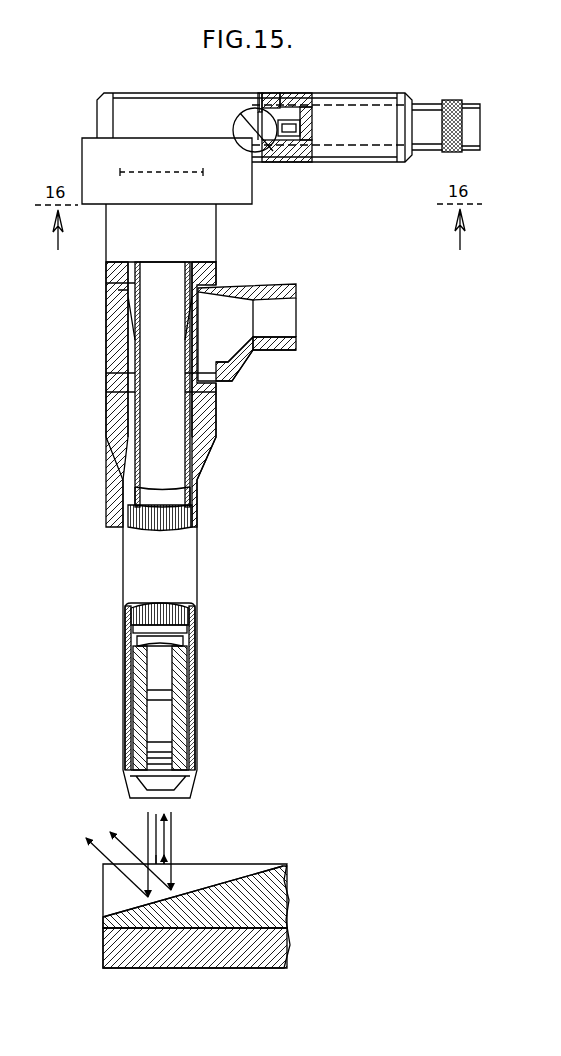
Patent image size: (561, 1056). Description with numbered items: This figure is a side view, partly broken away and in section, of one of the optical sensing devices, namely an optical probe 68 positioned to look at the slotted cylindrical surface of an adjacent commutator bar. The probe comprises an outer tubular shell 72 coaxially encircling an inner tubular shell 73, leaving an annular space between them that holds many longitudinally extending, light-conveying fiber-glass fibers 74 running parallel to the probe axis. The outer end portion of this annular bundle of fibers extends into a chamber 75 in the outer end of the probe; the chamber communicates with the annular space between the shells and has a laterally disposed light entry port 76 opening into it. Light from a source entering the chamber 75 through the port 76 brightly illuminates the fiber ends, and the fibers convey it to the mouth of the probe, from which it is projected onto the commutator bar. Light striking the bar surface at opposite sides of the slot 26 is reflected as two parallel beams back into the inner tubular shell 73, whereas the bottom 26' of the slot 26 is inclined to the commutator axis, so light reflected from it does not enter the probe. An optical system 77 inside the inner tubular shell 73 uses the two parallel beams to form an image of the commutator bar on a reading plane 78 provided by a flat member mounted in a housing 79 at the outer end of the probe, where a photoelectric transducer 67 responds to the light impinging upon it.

The commutator slot 26 is at (196, 900).
The slot bottom 26' is at (241, 856).
The photoelectric transducer 67 is at (283, 148).
The optical probe 68 is at (123, 580).
The outer tubular shell 72 is at (172, 573).
The inner tubular shell 73 is at (170, 492).
The fiber-glass fibers 74 is at (170, 520).
The chamber 75 is at (127, 350).
The light entry port 76 is at (283, 319).
The optical system 77 is at (155, 784).
The reading plane 78 is at (134, 175).
The housing 79 is at (96, 150).